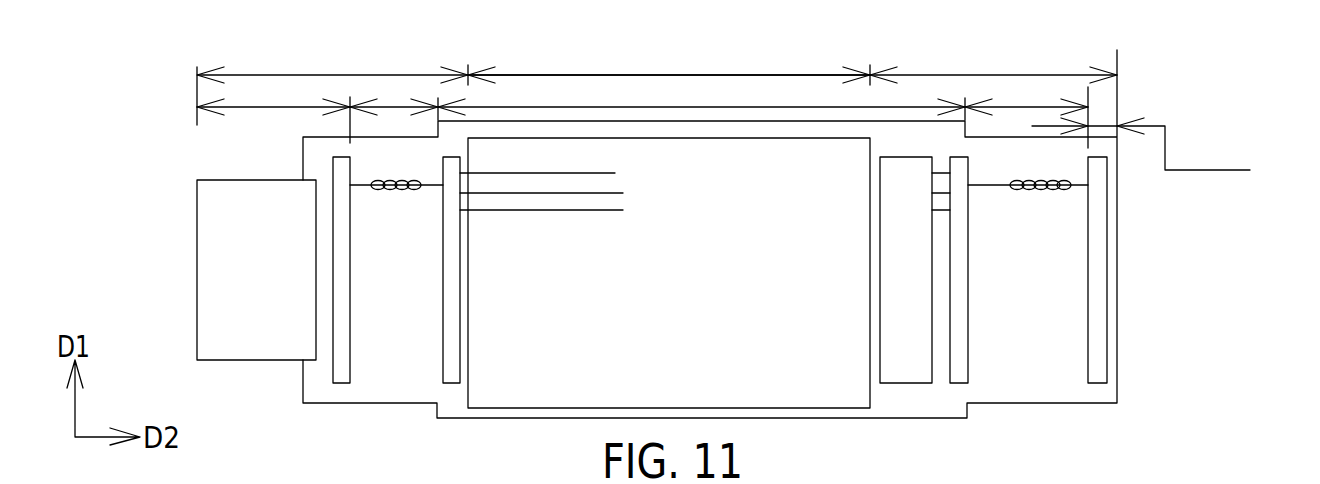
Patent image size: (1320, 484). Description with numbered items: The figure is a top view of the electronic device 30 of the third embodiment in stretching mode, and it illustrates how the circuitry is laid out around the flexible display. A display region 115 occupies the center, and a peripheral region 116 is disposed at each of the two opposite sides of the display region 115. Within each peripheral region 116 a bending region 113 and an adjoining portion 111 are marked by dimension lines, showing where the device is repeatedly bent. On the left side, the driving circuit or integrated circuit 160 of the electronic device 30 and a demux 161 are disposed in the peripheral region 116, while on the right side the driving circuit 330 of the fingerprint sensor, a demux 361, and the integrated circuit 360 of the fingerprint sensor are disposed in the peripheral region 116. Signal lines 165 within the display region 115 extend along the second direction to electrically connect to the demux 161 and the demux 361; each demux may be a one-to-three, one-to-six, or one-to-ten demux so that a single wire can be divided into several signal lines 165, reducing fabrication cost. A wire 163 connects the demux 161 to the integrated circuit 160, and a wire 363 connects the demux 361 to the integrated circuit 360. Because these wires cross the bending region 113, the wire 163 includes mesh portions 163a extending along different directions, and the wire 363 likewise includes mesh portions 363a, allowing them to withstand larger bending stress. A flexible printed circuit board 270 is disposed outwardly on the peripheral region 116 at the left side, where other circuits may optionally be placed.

The electronic device 30 is at (1183, 121).
The first portion of housing wall 111 is at (723, 124).
The bending region 113 is at (719, 95).
The display region 115 is at (669, 57).
The peripheral region 116 is at (657, 83).
The integrated circuit 160 is at (343, 378).
The demux 161 is at (452, 378).
The wire 163 is at (362, 190).
The mesh portions 163a is at (402, 191).
The signal lines 165 is at (633, 170).
The flexible printed circuit board 270 is at (278, 285).
The driving circuit 330 is at (930, 285).
The integrated circuit 360 is at (1097, 378).
The demux 361 is at (960, 378).
The wire 363 is at (1007, 190).
The mesh portions 363a is at (1050, 191).